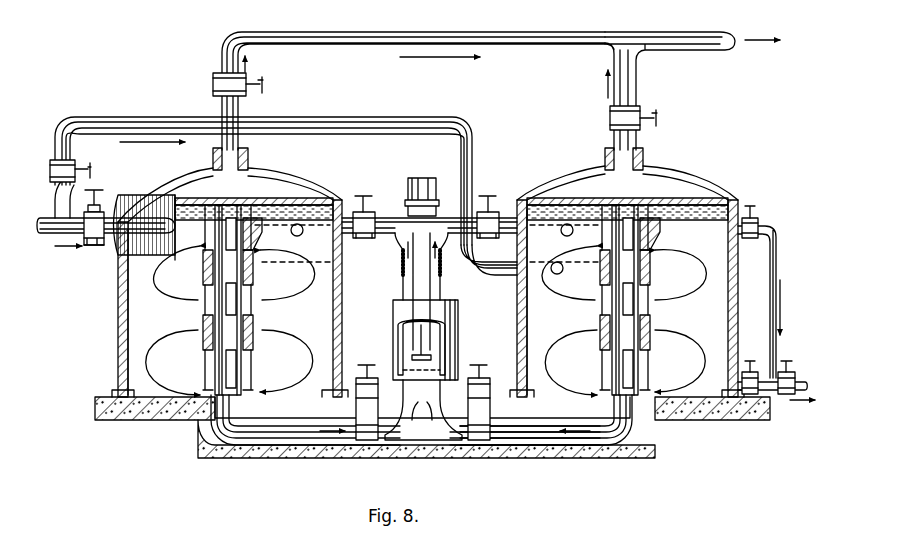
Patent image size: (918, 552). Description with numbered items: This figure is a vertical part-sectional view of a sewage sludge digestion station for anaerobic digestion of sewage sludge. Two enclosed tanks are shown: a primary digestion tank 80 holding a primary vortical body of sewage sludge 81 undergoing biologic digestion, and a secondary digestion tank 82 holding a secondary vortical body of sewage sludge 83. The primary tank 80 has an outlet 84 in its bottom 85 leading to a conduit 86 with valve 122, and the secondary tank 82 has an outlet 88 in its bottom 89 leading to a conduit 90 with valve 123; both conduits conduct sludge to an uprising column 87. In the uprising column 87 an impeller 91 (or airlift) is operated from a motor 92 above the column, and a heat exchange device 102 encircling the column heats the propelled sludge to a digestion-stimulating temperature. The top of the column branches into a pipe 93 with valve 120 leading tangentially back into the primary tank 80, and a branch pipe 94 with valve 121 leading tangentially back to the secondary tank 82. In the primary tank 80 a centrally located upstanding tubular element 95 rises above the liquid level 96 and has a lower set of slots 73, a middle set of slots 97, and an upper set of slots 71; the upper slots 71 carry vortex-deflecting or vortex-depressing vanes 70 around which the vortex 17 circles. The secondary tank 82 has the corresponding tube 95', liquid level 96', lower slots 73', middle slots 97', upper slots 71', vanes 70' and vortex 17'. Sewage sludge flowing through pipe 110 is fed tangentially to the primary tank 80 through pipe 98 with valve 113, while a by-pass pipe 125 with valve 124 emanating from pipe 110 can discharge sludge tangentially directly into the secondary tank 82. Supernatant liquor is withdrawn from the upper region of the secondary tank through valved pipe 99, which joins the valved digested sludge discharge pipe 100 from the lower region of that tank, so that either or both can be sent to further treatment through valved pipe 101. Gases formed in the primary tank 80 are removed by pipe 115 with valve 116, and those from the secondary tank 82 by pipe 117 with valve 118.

The vortex 17 is at (238, 309).
The vortex 17' is at (618, 309).
The vortex-deflecting vanes 70 is at (262, 245).
The vortex-deflecting vanes 70' is at (663, 241).
The upper set of slots 71 is at (205, 255).
The upper set of slots 71' is at (603, 247).
The lower set of slots 73 is at (203, 369).
The lower set of slots 73' is at (597, 369).
The primary digestion tank 80 is at (118, 308).
The primary vortical body of sewage sludge 81 is at (135, 325).
The secondary digestion tank 82 is at (517, 294).
The secondary vortical body of sewage sludge 83 is at (535, 320).
The outlet 84 is at (211, 427).
The bottom 85 is at (130, 420).
The conduit 86 is at (265, 448).
The uprising column 87 is at (403, 274).
The outlet 88 is at (634, 422).
The bottom 89 is at (730, 420).
The conduit 90 is at (580, 447).
The impeller 91 is at (410, 360).
The motor 92 is at (422, 178).
The pipe 93 is at (400, 216).
The branch pipe 94 is at (515, 217).
The tubular element 95 is at (245, 297).
The tubular element 95' is at (605, 297).
The liquid level 96 is at (254, 198).
The liquid level 96' is at (627, 190).
The middle set of slots 97 is at (205, 300).
The middle set of slots 97' is at (599, 300).
The pipe 98 is at (125, 200).
The valved pipe 99 is at (770, 252).
The digested sludge discharge pipe 100 is at (755, 396).
The valved pipe 101 is at (790, 372).
The heat exchange device 102 is at (393, 320).
The pipe 110 is at (50, 238).
The valve 113 is at (95, 246).
The pipe 115 is at (240, 105).
The valve 116 is at (213, 87).
The pipe 117 is at (636, 84).
The valve 118 is at (640, 124).
The valve 120 is at (352, 207).
The valve 121 is at (500, 210).
The valve 122 is at (355, 378).
The valve 123 is at (492, 380).
The valve 124 is at (78, 168).
The by-pass pipe 125 is at (105, 118).